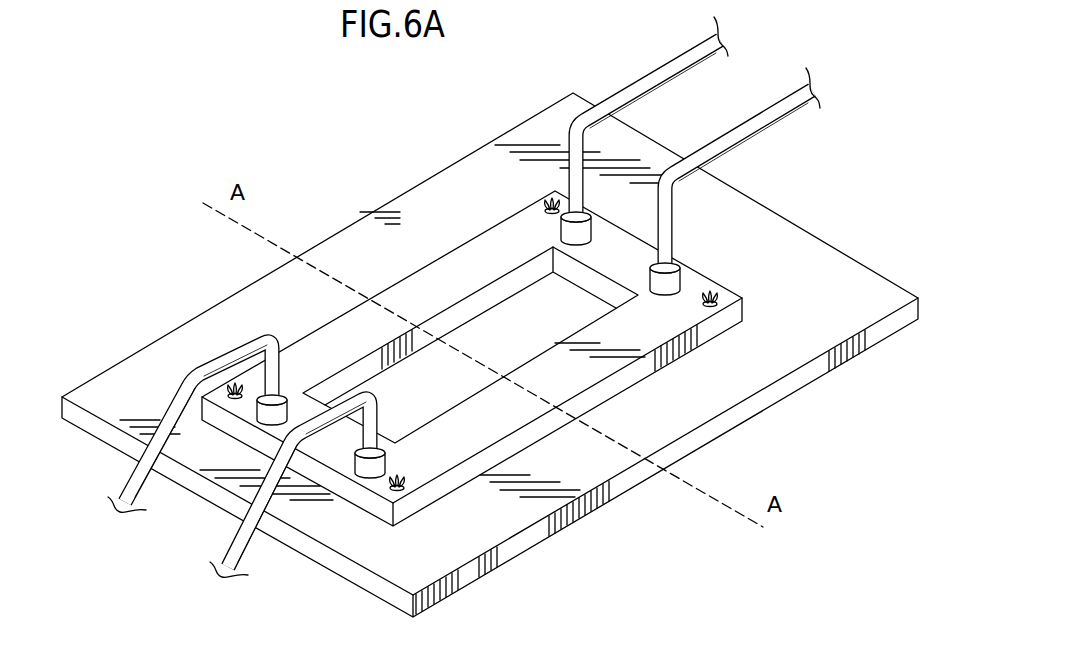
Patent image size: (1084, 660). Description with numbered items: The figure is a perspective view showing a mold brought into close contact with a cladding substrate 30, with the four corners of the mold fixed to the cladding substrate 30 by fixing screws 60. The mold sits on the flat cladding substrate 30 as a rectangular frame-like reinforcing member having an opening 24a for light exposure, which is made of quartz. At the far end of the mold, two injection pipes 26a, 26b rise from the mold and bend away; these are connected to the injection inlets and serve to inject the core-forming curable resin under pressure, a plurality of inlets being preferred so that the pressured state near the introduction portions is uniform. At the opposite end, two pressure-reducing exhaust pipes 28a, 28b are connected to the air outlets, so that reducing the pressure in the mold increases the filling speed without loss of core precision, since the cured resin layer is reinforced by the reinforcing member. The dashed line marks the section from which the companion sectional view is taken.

The cladding substrate 30 is at (798, 242).
The opening for light exposure 24a is at (418, 413).
The injection pipe 26a is at (720, 143).
The injection pipe 26b is at (618, 102).
The pressure-reducing exhaust pipe 28a is at (240, 537).
The pressure-reducing exhaust pipe 28b is at (143, 478).
The fixing screw 60 is at (728, 291).